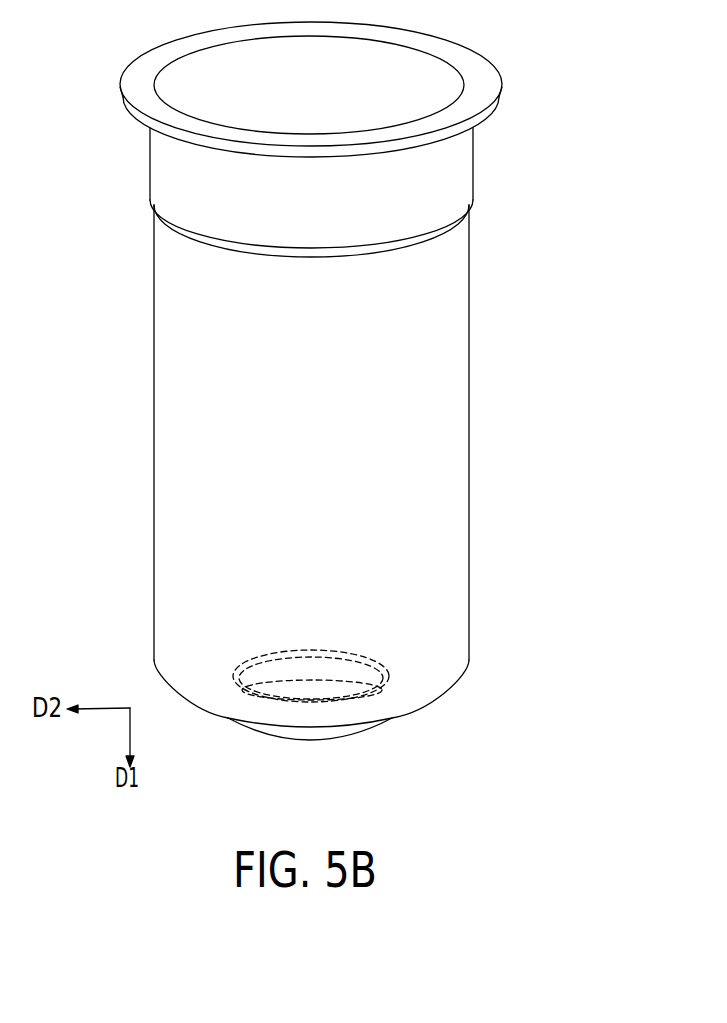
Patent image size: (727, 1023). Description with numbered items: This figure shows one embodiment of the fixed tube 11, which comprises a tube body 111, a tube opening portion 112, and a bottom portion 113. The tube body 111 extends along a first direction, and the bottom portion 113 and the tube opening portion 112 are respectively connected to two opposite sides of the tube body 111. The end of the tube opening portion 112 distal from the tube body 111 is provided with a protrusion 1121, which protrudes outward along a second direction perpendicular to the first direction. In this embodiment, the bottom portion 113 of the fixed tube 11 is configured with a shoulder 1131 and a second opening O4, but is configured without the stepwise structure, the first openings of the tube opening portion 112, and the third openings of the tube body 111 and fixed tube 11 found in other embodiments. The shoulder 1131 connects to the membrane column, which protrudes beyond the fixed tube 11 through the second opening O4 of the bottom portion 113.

The fixed tube 11 is at (351, 391).
The tube body 111 is at (448, 333).
The tube opening portion 112 is at (457, 172).
The protrusion 1121 is at (478, 75).
The bottom portion 113 is at (455, 685).
The shoulder 1131 is at (425, 707).
The second opening O4 is at (340, 667).